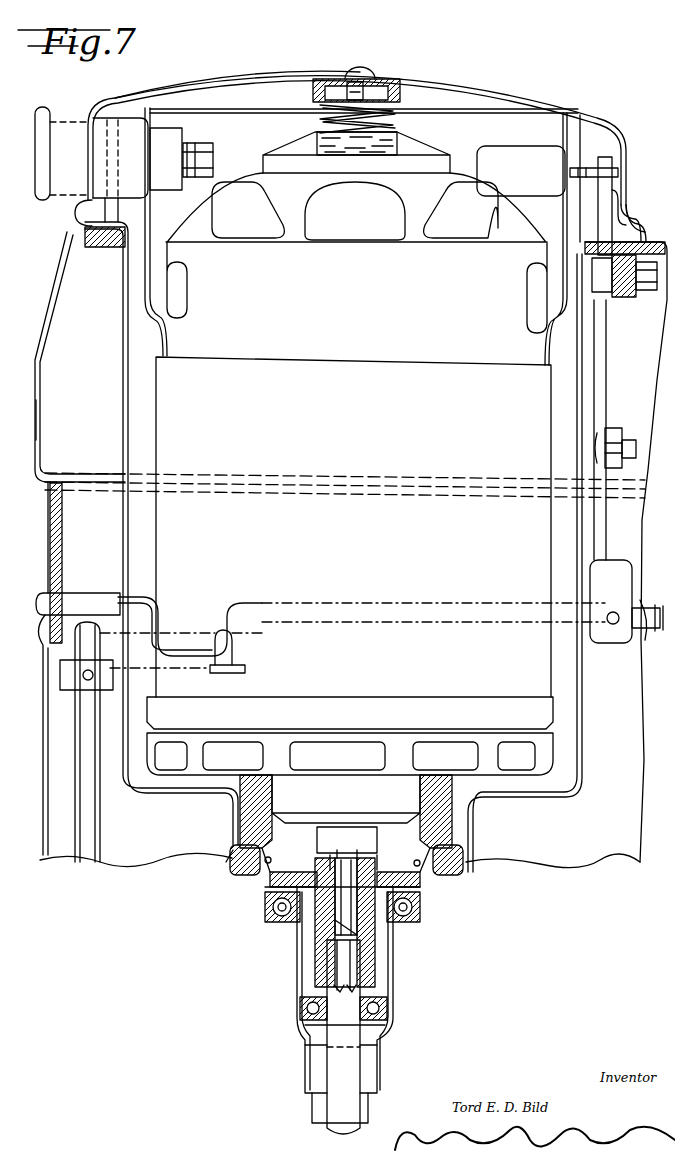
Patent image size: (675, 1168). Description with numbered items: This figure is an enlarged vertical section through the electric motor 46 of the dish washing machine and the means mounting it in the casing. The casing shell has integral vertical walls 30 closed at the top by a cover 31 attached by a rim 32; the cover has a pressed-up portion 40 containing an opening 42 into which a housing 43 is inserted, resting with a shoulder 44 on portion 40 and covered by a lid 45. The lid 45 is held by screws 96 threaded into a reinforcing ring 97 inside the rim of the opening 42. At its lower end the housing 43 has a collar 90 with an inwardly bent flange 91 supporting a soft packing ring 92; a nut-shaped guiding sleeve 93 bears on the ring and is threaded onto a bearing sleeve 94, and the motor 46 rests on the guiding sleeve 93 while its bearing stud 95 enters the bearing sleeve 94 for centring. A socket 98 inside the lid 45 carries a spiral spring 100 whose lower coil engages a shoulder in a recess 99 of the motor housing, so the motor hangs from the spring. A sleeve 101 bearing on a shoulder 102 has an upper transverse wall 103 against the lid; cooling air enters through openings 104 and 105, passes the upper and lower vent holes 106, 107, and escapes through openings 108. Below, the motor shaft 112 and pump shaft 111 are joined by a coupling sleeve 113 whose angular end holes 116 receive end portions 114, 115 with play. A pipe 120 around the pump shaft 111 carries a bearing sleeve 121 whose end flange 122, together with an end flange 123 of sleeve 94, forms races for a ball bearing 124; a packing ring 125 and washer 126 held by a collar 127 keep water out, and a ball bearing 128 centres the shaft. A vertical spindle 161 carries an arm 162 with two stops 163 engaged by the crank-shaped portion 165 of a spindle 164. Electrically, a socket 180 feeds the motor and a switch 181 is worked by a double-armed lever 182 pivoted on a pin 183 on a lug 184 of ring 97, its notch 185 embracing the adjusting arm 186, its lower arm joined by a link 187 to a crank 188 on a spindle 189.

The shell walls 30 is at (50, 772).
The cover 31 is at (38, 408).
The rim 32 is at (42, 480).
The pressed-up portion 40 is at (645, 250).
The opening 42 is at (120, 248).
The housing 43 is at (125, 333).
The shoulder 44 is at (80, 214).
The lid 45 is at (445, 77).
The electric motor 46 is at (160, 382).
The collar 90 is at (470, 834).
The inwardly bent flange 91 is at (445, 877).
The packing ring 92 is at (465, 857).
The guiding sleeve 93 is at (470, 818).
The bearing sleeve 94 is at (247, 880).
The bearing stud 95 is at (360, 785).
The screws 96 is at (105, 148).
The reinforcing ring 97 is at (100, 247).
The socket 98 is at (300, 78).
The recess 99 is at (405, 145).
The spring 100 is at (381, 92).
The sleeve 101 is at (151, 205).
The shoulder 102 is at (551, 364).
The upper transverse wall 103 is at (536, 116).
The openings 104 is at (208, 86).
The openings 105 is at (219, 108).
The upper vent holes 106 is at (325, 198).
The lower vent holes 107 is at (525, 756).
The openings 108 is at (605, 120).
The pump shaft 111 is at (352, 1066).
The motor shaft 112 is at (320, 840).
The coupling sleeve 113 is at (325, 945).
The end portion 114 is at (345, 898).
The end portion 115 is at (333, 962).
The end holes 116 is at (377, 918).
The pipe 120 is at (365, 1108).
The bearing sleeve 121 is at (395, 975).
The end flange 122 is at (422, 912).
The end flange 123 is at (405, 924).
The ball bearing 124 is at (266, 912).
The packing ring 125 is at (423, 886).
The washer 126 is at (392, 868).
The collar 127 is at (222, 863).
The ball bearing 128 is at (302, 1005).
The vertical spindle 161 is at (98, 833).
The arm 162 is at (247, 669).
The stops 163 is at (222, 630).
The spindle 164 is at (393, 603).
The crank-shaped portion 165 is at (176, 630).
The socket 180 is at (73, 120).
The switch 181 is at (499, 142).
The double-armed lever 182 is at (612, 332).
The pin 183 is at (645, 296).
The lug 184 is at (608, 298).
The notch 185 is at (606, 195).
The adjusting arm 186 is at (583, 170).
The link 187 is at (616, 436).
The crank 188 is at (602, 556).
The spindle 189 is at (647, 640).